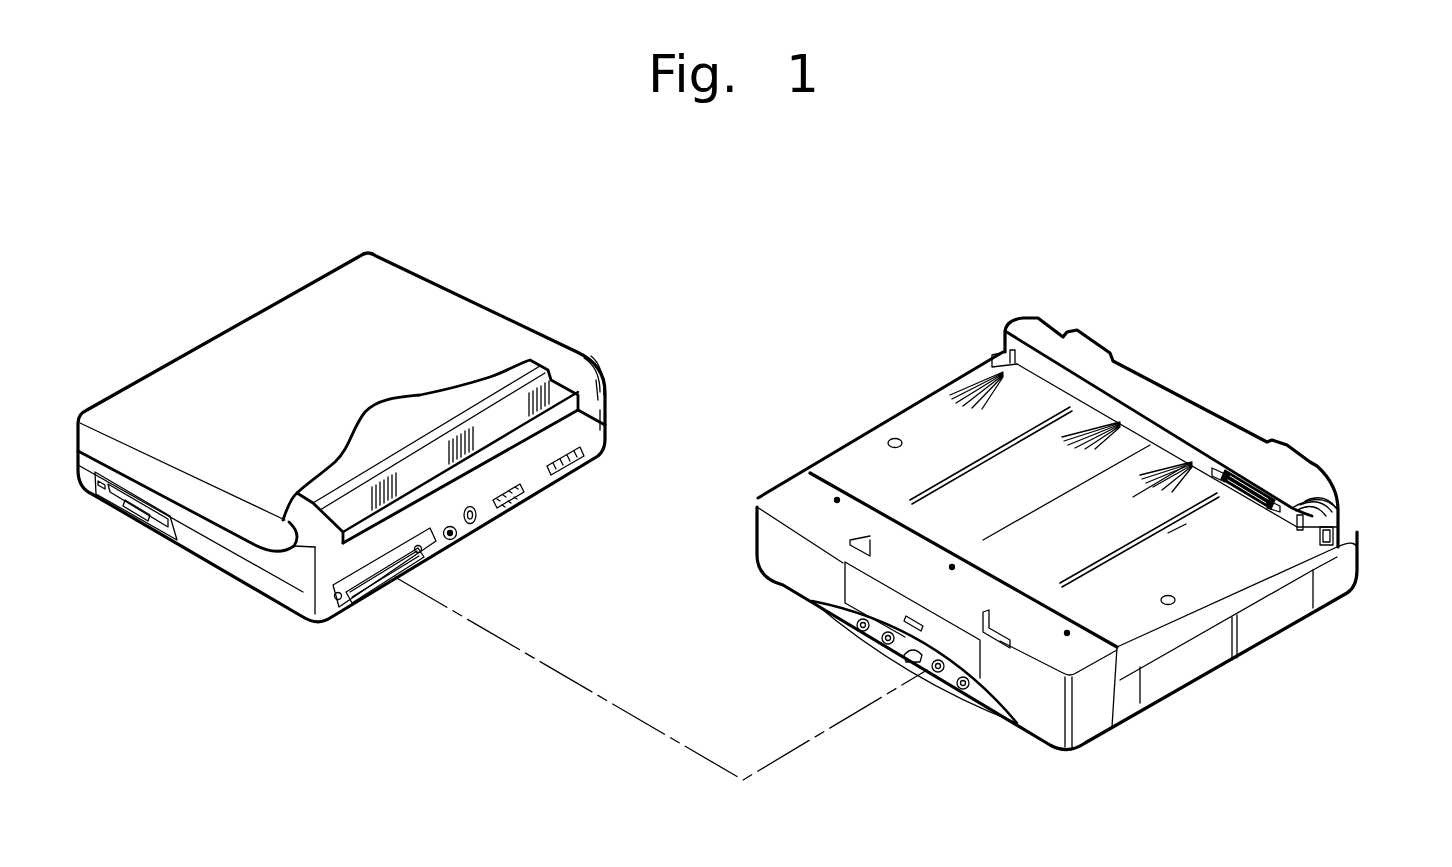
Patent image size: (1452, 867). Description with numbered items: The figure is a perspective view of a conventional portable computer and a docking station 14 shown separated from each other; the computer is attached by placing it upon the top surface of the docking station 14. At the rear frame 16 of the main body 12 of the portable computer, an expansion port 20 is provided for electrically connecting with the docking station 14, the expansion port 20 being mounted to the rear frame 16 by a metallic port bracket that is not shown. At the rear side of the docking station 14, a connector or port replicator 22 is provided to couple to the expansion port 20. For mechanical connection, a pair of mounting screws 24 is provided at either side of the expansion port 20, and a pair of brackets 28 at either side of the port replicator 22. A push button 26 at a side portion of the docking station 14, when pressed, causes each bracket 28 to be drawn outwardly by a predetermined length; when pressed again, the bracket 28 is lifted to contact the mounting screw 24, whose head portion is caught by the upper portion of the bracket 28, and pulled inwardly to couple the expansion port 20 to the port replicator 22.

The main body 12 is at (289, 598).
The docking station 14 is at (467, 281).
The rear frame 16 is at (471, 527).
The expansion port 20 is at (385, 590).
The port replicator 22 is at (1244, 470).
The mounting screws 24 is at (343, 600).
The push button 26 is at (1340, 527).
The brackets 28 is at (1310, 493).